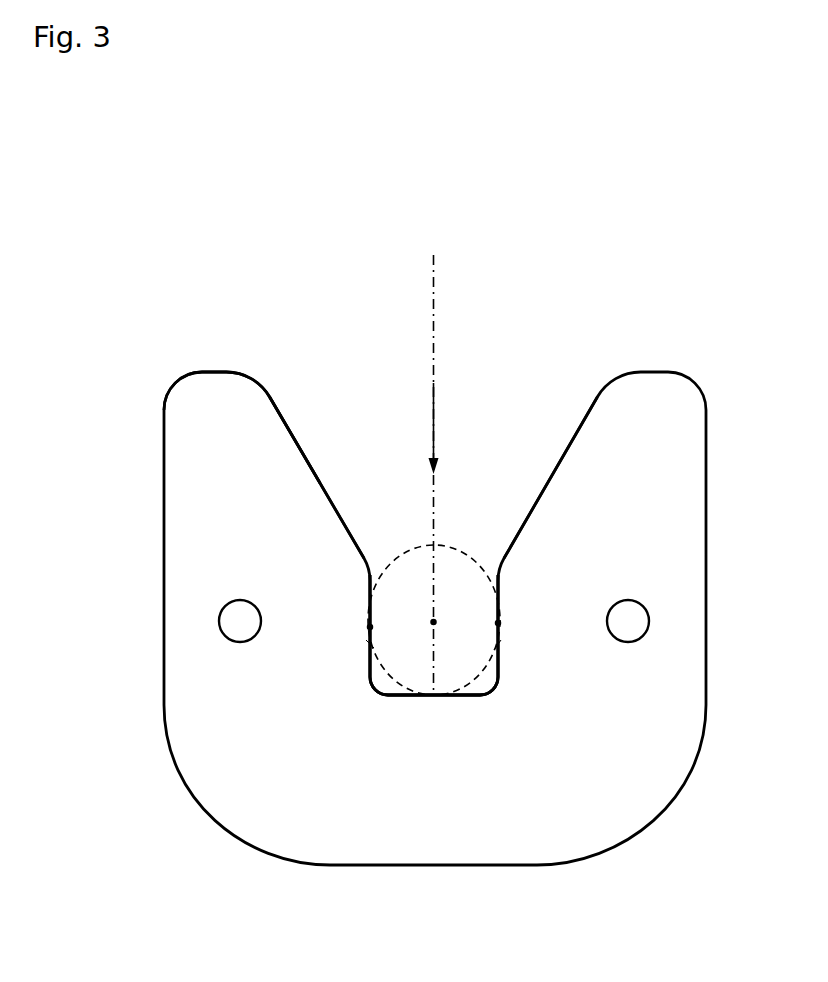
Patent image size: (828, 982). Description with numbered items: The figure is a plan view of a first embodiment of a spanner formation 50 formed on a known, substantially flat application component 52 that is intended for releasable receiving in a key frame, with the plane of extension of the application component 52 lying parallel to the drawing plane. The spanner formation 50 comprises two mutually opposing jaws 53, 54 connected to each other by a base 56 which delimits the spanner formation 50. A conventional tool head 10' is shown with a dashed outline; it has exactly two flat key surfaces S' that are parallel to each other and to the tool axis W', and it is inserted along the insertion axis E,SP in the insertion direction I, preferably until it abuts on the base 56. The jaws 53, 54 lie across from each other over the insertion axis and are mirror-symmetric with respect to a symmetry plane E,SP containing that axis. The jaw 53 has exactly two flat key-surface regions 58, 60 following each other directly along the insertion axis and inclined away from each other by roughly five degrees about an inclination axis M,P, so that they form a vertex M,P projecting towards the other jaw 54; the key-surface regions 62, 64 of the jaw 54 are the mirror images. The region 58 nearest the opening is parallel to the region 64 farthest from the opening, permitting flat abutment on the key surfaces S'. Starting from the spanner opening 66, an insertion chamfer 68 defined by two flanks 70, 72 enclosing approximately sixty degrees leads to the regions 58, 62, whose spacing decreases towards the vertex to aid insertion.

The application component 52 is at (278, 890).
The spanner opening 66 is at (338, 363).
The insertion chamfer 68 is at (300, 484).
The flank 70 is at (312, 473).
The flank 72 is at (551, 473).
The key-surface region 58 is at (371, 590).
The key-surface region 62 is at (499, 586).
The key-surface region 60 is at (378, 696).
The base 56 is at (420, 697).
The key-surface region 64 is at (491, 697).
The spanner formation 50 is at (452, 533).
The conventional tool head 10' is at (446, 598).
The insertion axis and symmetry plane E,SP is at (431, 326).
The insertion direction I is at (431, 387).
The tool axis W' is at (419, 599).
The inclination axis and vertex M,P is at (370, 627).
The key surface S' is at (431, 594).
The jaw 53 is at (351, 657).
The jaw 54 is at (518, 663).